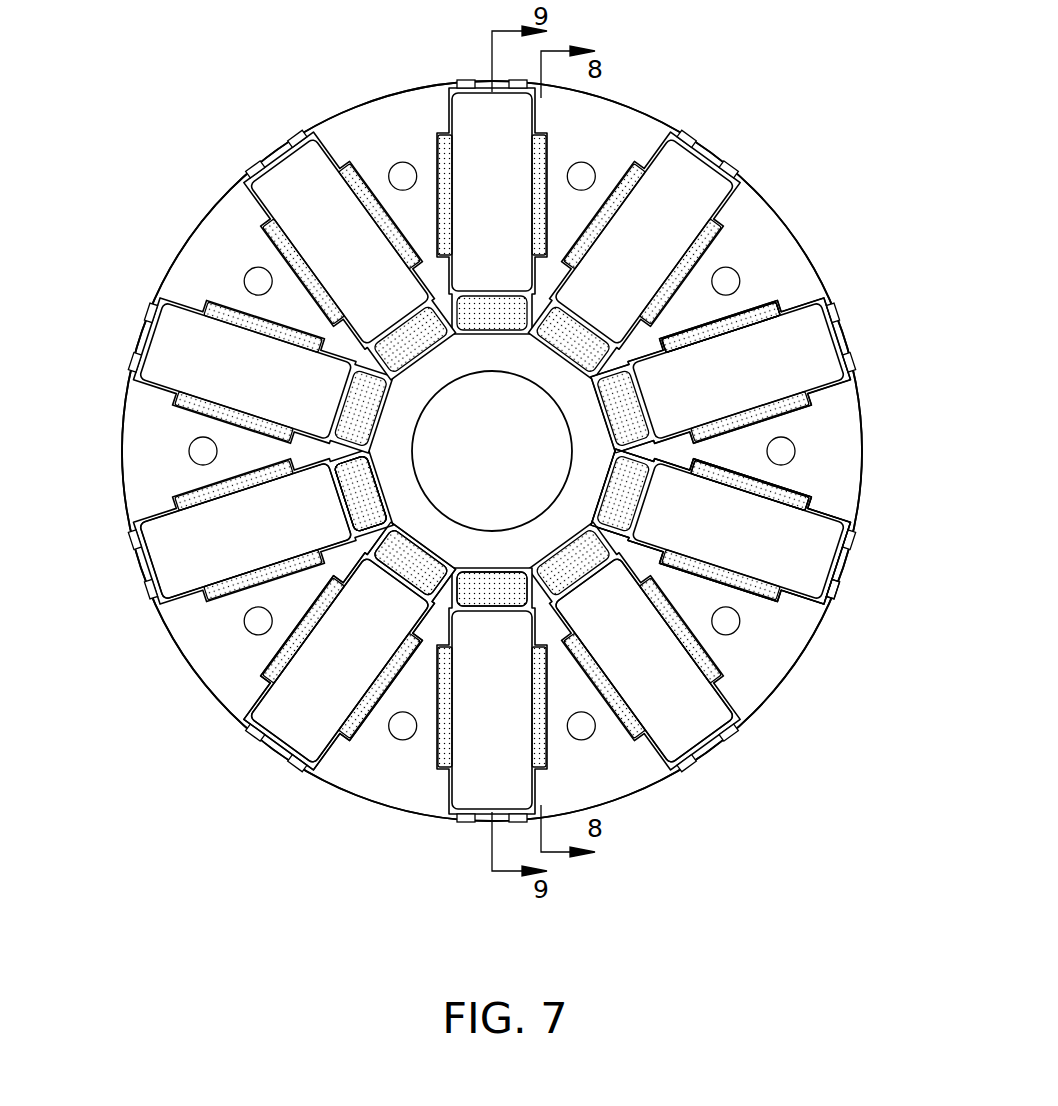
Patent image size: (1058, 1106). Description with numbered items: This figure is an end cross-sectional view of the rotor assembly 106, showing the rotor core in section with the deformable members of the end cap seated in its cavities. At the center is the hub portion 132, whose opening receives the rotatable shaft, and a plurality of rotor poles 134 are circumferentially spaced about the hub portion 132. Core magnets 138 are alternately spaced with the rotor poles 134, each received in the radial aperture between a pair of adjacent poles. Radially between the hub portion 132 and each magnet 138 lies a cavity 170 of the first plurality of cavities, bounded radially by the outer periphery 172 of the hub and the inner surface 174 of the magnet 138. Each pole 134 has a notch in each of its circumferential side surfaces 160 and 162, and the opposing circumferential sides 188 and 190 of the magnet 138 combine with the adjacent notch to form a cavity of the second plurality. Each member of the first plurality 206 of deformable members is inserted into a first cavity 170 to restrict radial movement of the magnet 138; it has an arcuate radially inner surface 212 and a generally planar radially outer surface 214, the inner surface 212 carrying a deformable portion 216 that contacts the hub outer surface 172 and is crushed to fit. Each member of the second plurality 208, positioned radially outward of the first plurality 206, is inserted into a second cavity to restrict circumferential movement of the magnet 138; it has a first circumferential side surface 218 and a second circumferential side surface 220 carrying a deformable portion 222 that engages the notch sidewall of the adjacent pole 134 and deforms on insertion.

The rotor assembly 106 is at (223, 130).
The hub portion 132 is at (457, 548).
The rotor poles 134 is at (633, 768).
The core magnets 138 is at (690, 727).
The circumferential side surface 160 is at (653, 547).
The circumferential side surface 162 is at (677, 462).
The first plurality of cavities 170 is at (368, 577).
The outer periphery of the hub 172 is at (393, 577).
The inner surface of magnet 174 is at (382, 572).
The circumferential side of magnet 188 is at (825, 521).
The circumferential side of magnet 190 is at (797, 597).
The first plurality of deformable members 206 is at (327, 462).
The second plurality of deformable members 208 is at (797, 502).
The arcuate radially inner surface 212 is at (365, 492).
The generally planar radially outer surface 214 is at (376, 516).
The deformable portion 216 is at (352, 476).
The first circumferential side surface 218 is at (772, 317).
The second circumferential side surface 220 is at (687, 327).
The deformable portion 222 is at (723, 315).